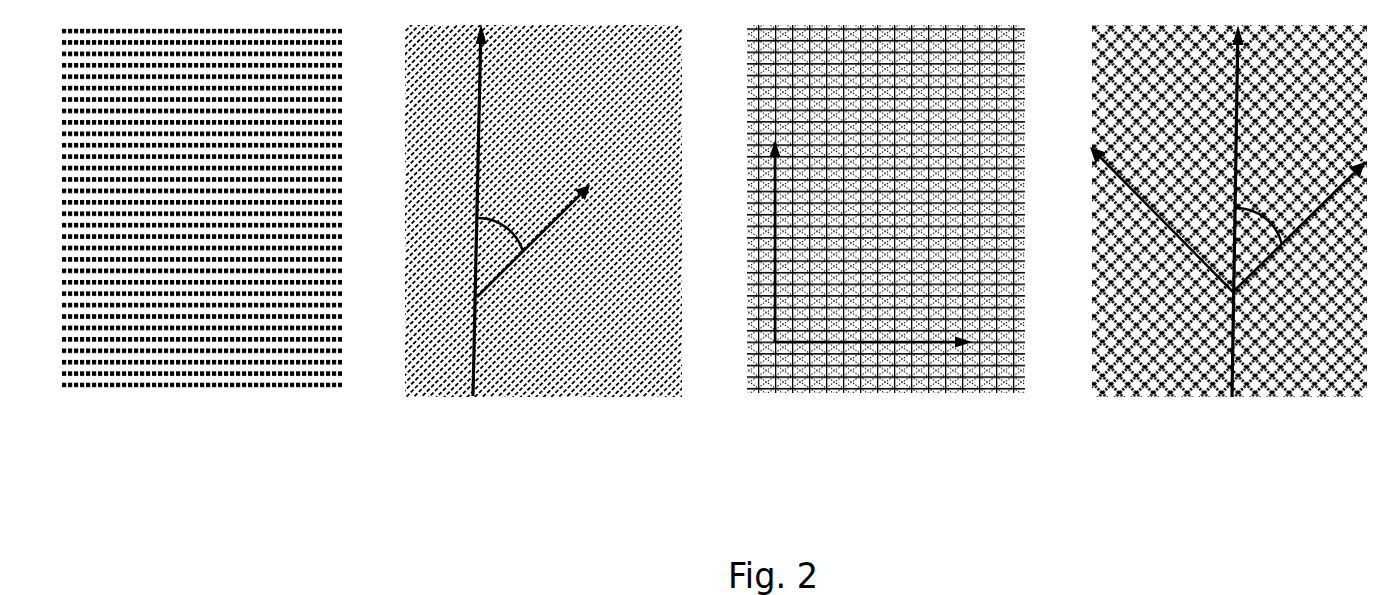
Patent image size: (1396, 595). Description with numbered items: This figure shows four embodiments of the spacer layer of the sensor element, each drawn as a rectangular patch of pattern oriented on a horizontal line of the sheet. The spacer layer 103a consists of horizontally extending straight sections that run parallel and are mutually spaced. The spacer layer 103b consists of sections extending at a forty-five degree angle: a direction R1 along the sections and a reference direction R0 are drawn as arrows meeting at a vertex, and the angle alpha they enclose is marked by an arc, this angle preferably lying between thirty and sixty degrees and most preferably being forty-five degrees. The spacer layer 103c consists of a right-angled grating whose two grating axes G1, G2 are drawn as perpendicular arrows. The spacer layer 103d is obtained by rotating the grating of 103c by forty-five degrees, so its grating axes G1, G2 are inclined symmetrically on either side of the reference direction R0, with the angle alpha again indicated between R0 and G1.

The spacer layer 103a is at (202, 243).
The spacer layer 103b is at (543, 239).
The spacer layer 103c is at (886, 239).
The spacer layer 103d is at (1229, 236).
The direction R0 is at (858, 210).
The direction R1 is at (533, 241).
The grating axis G1 is at (1070, 255).
The grating axis G2 is at (1002, 241).